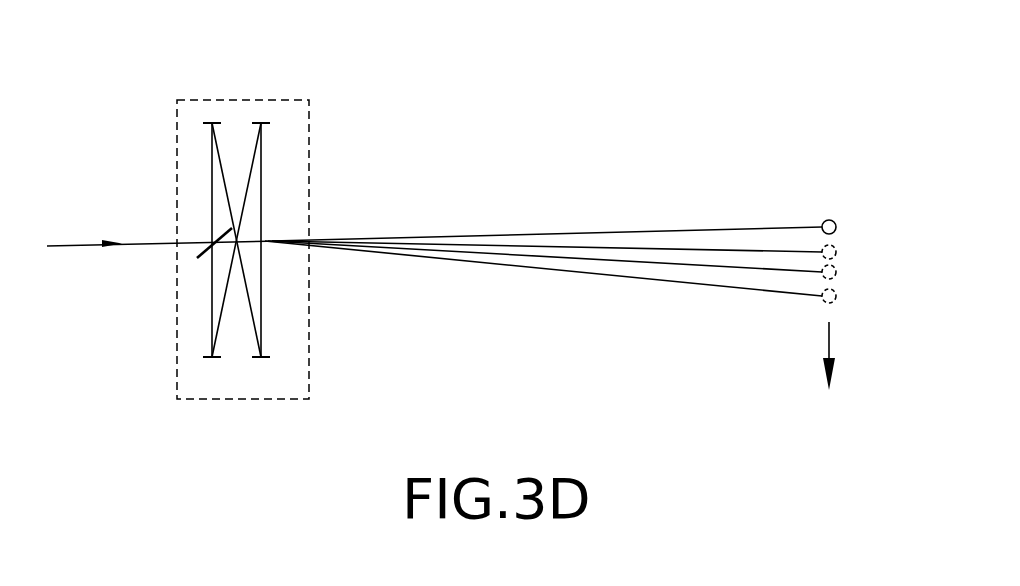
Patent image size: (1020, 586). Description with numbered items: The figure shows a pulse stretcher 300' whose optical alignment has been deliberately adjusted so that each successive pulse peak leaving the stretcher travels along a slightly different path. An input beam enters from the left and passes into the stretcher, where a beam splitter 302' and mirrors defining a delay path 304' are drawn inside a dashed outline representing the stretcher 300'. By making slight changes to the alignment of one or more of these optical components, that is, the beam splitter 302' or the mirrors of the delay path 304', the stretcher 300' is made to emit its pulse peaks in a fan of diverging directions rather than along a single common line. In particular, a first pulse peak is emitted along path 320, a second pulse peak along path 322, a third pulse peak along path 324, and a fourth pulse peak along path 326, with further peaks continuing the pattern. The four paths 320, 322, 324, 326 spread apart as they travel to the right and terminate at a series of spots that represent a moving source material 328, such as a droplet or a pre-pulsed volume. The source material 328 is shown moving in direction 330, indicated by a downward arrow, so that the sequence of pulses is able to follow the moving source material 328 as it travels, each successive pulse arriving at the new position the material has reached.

The pulse stretcher 300' is at (177, 249).
The beam splitter 302' is at (142, 273).
The delay path 304' is at (237, 183).
The path 320 is at (527, 232).
The path 322 is at (602, 248).
The path 324 is at (690, 266).
The path 326 is at (765, 292).
The moving source material 328 is at (836, 222).
The direction 330 is at (829, 342).